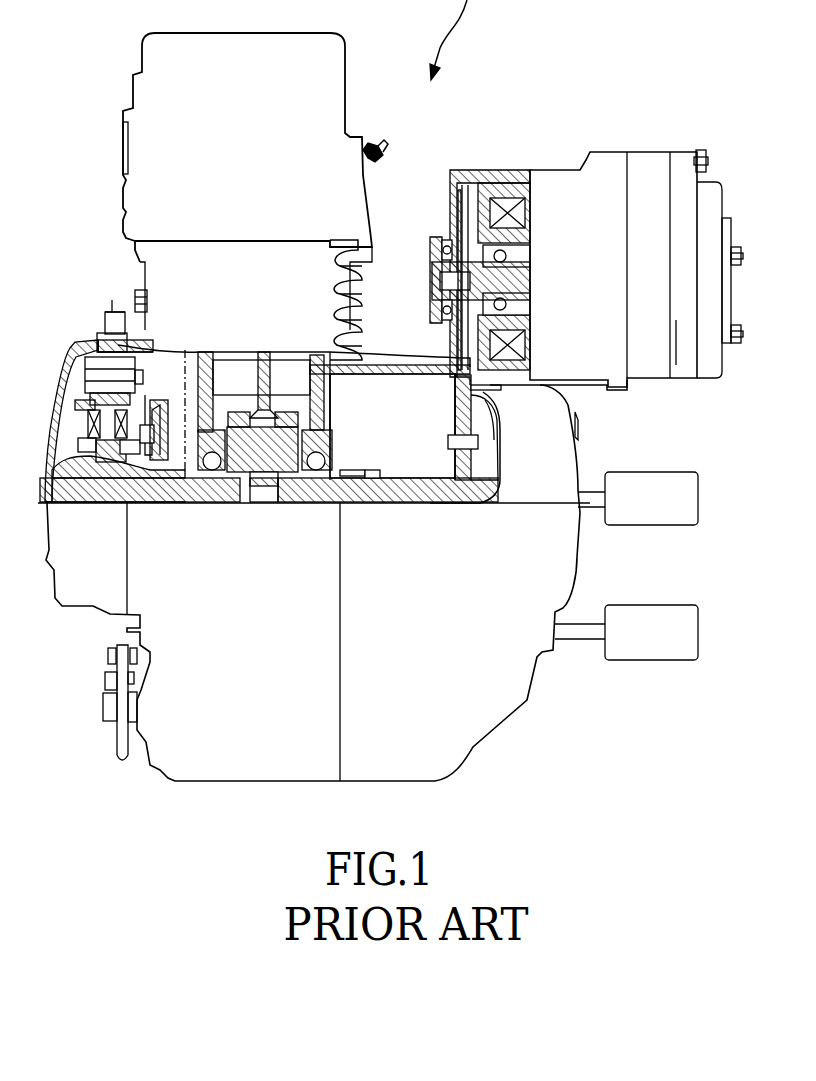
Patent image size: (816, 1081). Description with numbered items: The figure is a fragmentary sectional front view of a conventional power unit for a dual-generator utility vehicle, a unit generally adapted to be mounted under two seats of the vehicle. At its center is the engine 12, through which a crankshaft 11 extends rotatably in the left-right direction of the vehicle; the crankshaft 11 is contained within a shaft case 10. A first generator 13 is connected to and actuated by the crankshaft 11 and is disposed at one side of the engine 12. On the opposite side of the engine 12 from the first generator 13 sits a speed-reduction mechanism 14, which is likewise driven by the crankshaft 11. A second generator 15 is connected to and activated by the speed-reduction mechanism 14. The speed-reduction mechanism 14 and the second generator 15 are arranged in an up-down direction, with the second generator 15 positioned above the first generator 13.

The shaft case 10 is at (210, 738).
The crankshaft 11 is at (393, 479).
The engine 12 is at (284, 357).
The first generator 13 is at (56, 356).
The speed-reduction mechanism 14 is at (456, 393).
The second generator 15 is at (567, 155).